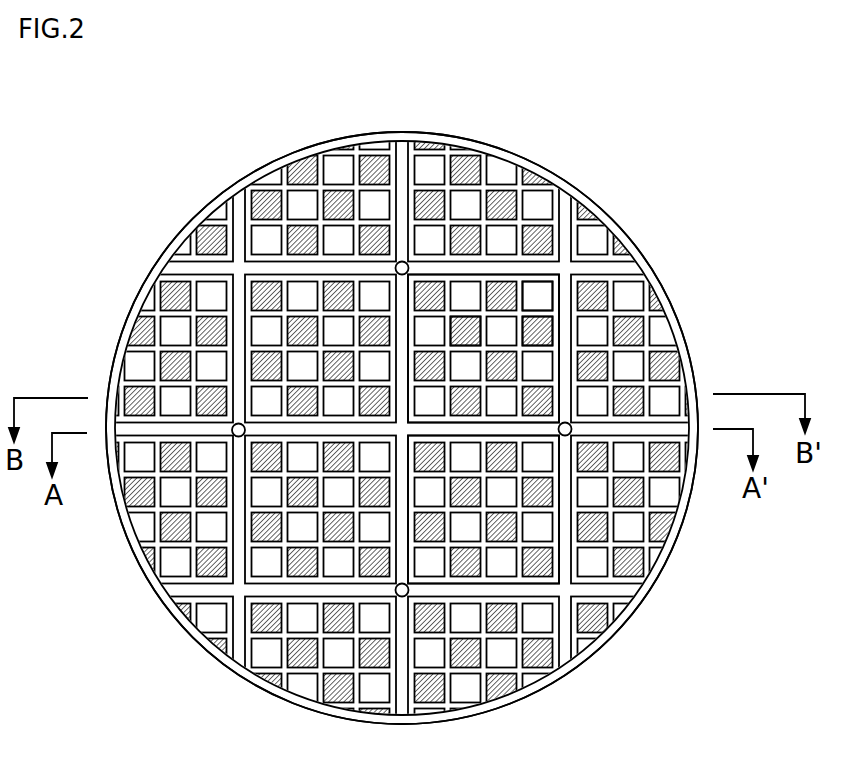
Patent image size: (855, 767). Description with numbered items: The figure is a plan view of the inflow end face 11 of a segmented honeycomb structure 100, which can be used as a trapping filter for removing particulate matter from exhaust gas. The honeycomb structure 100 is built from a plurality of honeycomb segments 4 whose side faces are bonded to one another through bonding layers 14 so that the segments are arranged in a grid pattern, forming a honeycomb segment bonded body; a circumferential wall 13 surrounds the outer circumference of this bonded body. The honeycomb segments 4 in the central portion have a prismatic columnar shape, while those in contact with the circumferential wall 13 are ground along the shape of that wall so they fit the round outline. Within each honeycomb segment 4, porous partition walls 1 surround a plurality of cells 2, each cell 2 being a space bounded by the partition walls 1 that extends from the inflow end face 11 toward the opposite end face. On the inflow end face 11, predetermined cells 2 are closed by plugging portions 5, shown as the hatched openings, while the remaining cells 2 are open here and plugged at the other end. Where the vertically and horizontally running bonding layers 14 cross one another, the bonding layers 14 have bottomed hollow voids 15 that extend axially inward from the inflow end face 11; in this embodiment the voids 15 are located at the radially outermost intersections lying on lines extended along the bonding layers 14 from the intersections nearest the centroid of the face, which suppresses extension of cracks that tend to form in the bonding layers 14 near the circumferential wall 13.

The honeycomb structure 100 is at (797, 97).
The inflow end face 11 is at (211, 178).
The circumferential wall 13 is at (610, 628).
The bonding layer 14 is at (322, 267).
The void 15 is at (398, 263).
The partition wall 1 is at (520, 300).
The cell 2 is at (550, 328).
The honeycomb segment 4 is at (560, 370).
The plugging portion 5 is at (472, 322).